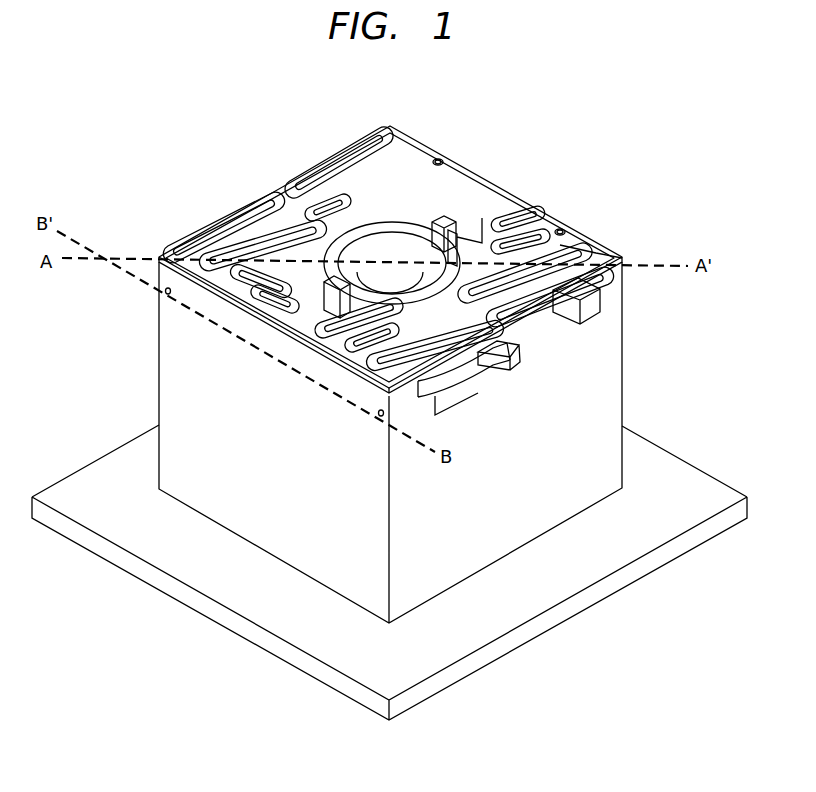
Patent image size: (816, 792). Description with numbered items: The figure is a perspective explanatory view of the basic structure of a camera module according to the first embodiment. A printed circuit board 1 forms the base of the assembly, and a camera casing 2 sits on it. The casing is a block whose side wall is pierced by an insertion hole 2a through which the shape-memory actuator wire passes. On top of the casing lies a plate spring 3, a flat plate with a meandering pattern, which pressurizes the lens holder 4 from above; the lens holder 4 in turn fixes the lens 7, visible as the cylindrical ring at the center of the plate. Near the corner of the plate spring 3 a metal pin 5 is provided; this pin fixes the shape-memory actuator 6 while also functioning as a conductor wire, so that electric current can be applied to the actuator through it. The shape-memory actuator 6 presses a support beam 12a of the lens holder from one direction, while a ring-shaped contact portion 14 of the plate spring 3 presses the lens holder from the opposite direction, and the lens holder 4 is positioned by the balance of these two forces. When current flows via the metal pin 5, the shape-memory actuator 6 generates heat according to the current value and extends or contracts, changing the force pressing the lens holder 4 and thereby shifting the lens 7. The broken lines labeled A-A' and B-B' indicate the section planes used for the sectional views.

The printed circuit board 1 is at (690, 470).
The camera casing 2 is at (608, 378).
The insertion hole 2a is at (163, 293).
The plate spring 3 is at (380, 133).
The lens holder 4 is at (487, 250).
The metal pin 5 is at (596, 253).
The shape-memory actuator 6 is at (473, 374).
The lens 7 is at (393, 275).
The support beam 12a is at (510, 358).
The ring-shaped contact portion 14 is at (438, 240).